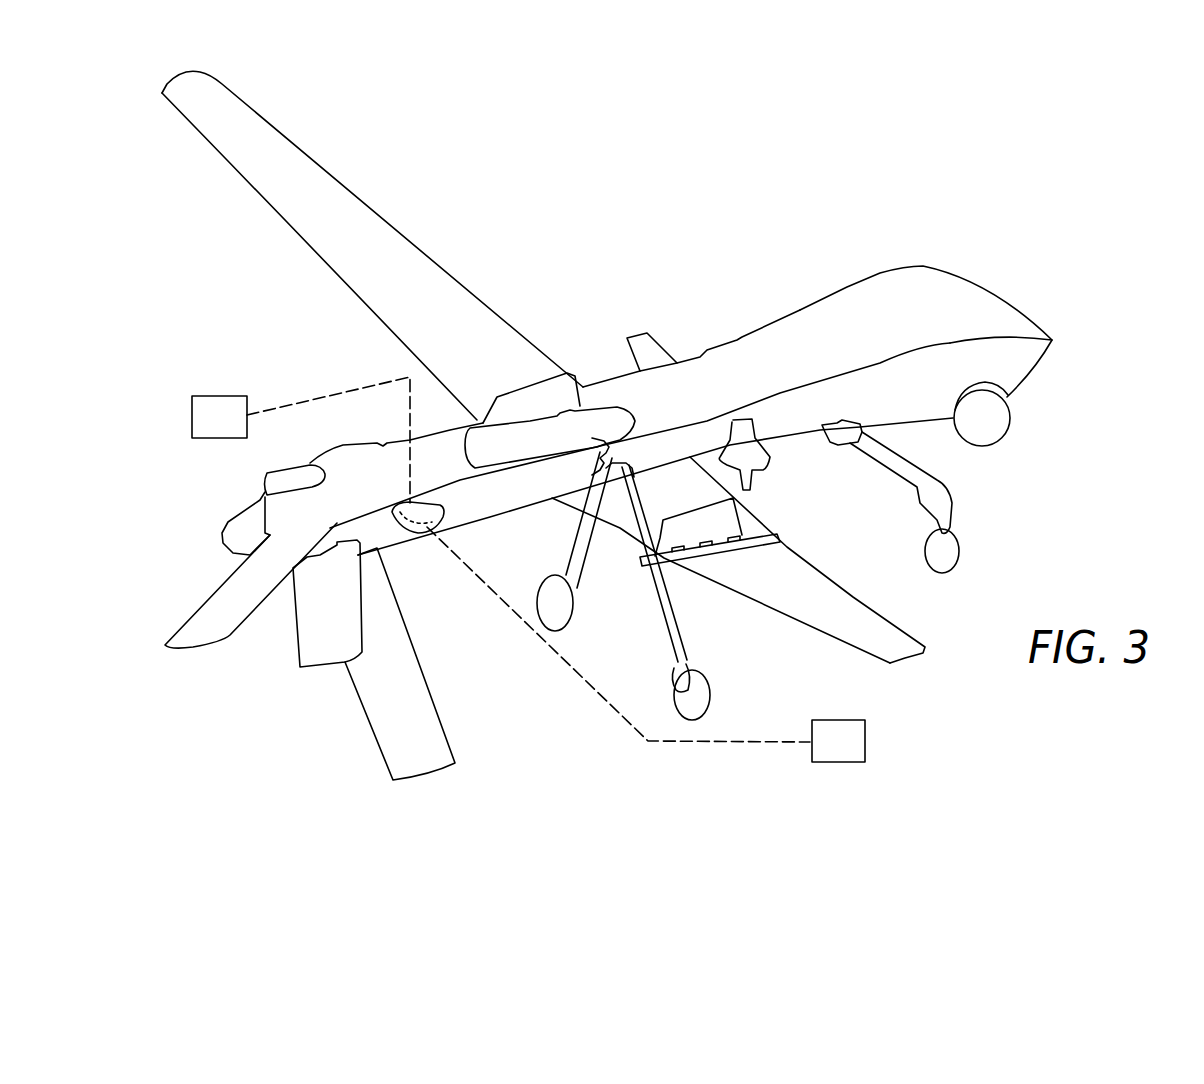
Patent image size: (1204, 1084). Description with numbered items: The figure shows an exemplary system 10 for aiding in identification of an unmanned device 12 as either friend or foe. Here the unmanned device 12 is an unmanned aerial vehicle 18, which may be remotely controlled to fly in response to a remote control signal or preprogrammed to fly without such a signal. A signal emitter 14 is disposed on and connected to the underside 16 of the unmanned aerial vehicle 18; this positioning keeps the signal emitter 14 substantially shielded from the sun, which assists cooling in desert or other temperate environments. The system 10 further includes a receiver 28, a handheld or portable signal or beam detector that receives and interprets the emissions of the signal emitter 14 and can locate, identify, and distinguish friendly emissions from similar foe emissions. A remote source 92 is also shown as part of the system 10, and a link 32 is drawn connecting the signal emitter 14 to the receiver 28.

The system 10 is at (912, 710).
The unmanned device 12 is at (668, 335).
The signal emitter 14 is at (430, 537).
The underside 16 is at (503, 502).
The unmanned aerial vehicle 18 is at (800, 310).
The receiver 28 is at (825, 752).
The communication link 32 is at (725, 742).
The remote source 92 is at (206, 428).